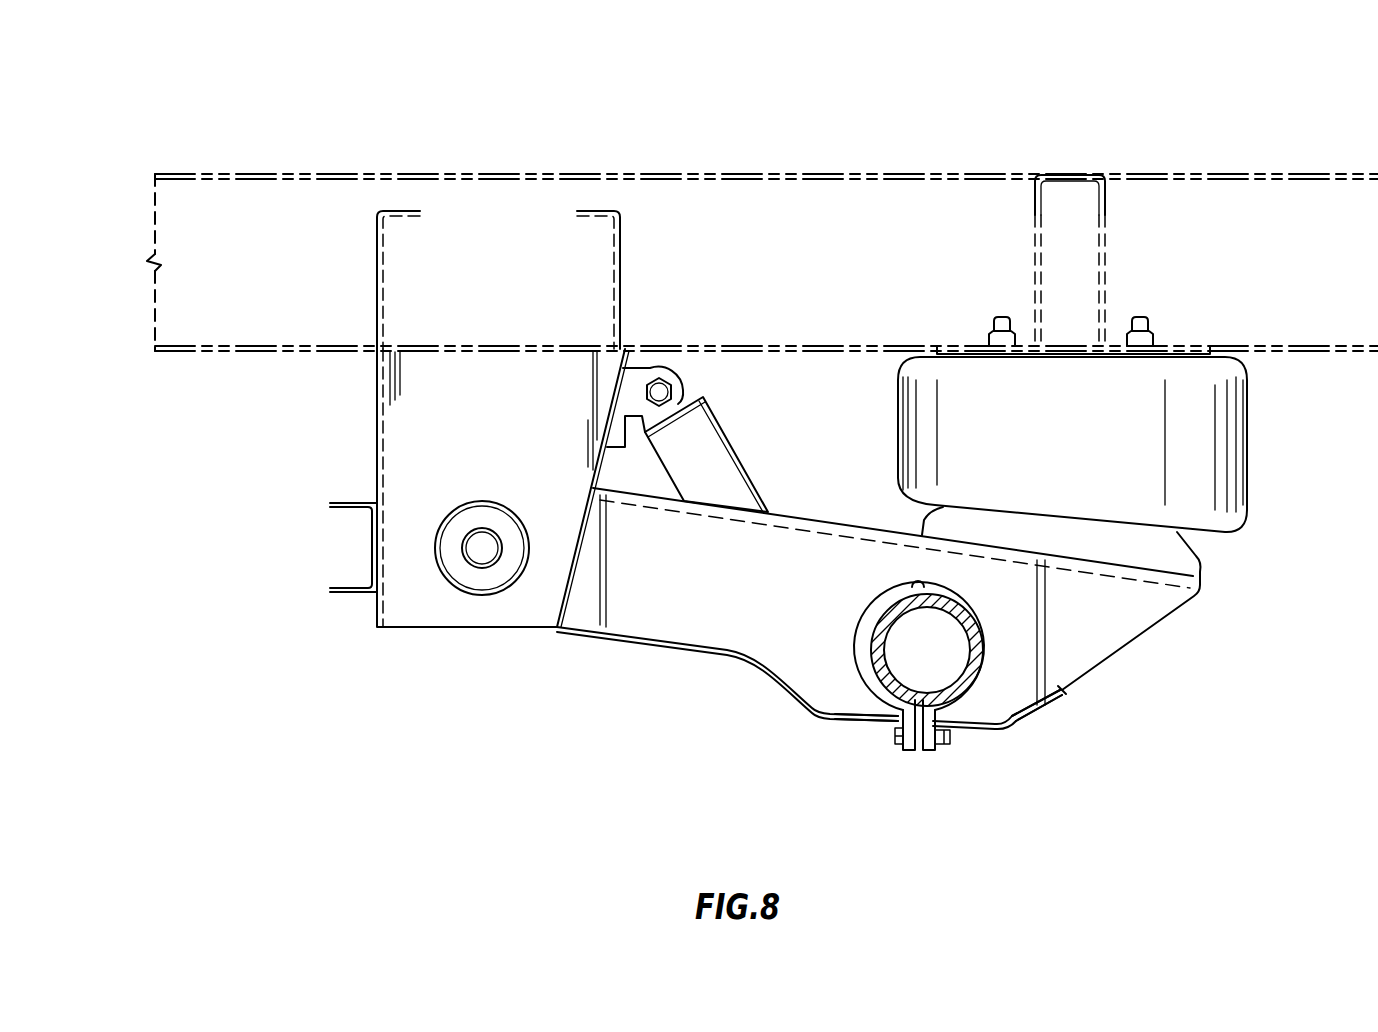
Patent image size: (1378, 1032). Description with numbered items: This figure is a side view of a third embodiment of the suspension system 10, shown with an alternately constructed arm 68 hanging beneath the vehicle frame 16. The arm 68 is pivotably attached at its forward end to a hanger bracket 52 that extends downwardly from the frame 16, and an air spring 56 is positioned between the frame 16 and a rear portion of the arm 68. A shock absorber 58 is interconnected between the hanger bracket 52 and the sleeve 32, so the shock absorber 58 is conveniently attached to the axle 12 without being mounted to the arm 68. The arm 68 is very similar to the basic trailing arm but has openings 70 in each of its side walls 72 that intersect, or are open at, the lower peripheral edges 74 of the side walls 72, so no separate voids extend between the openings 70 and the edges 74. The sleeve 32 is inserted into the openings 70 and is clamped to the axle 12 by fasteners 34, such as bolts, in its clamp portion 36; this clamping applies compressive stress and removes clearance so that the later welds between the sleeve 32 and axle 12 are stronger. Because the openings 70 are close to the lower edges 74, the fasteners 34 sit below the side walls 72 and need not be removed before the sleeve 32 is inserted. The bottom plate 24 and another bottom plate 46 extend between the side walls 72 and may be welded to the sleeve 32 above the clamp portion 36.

The suspension system 10 is at (1193, 128).
The axle 12 is at (870, 690).
The vehicle frame 16 is at (622, 172).
The bottom plate 24 is at (636, 648).
The sleeve 32 is at (998, 648).
The fasteners 34 is at (900, 742).
The clamp portion 36 is at (925, 752).
The bottom plate 46 is at (1033, 713).
The hanger bracket 52 is at (377, 413).
The air spring 56 is at (1250, 437).
The shock absorber 58 is at (757, 475).
The arm 68 is at (1165, 627).
The openings 70 is at (912, 592).
The side walls 72 is at (755, 614).
The lower peripheral edges 74 is at (975, 728).